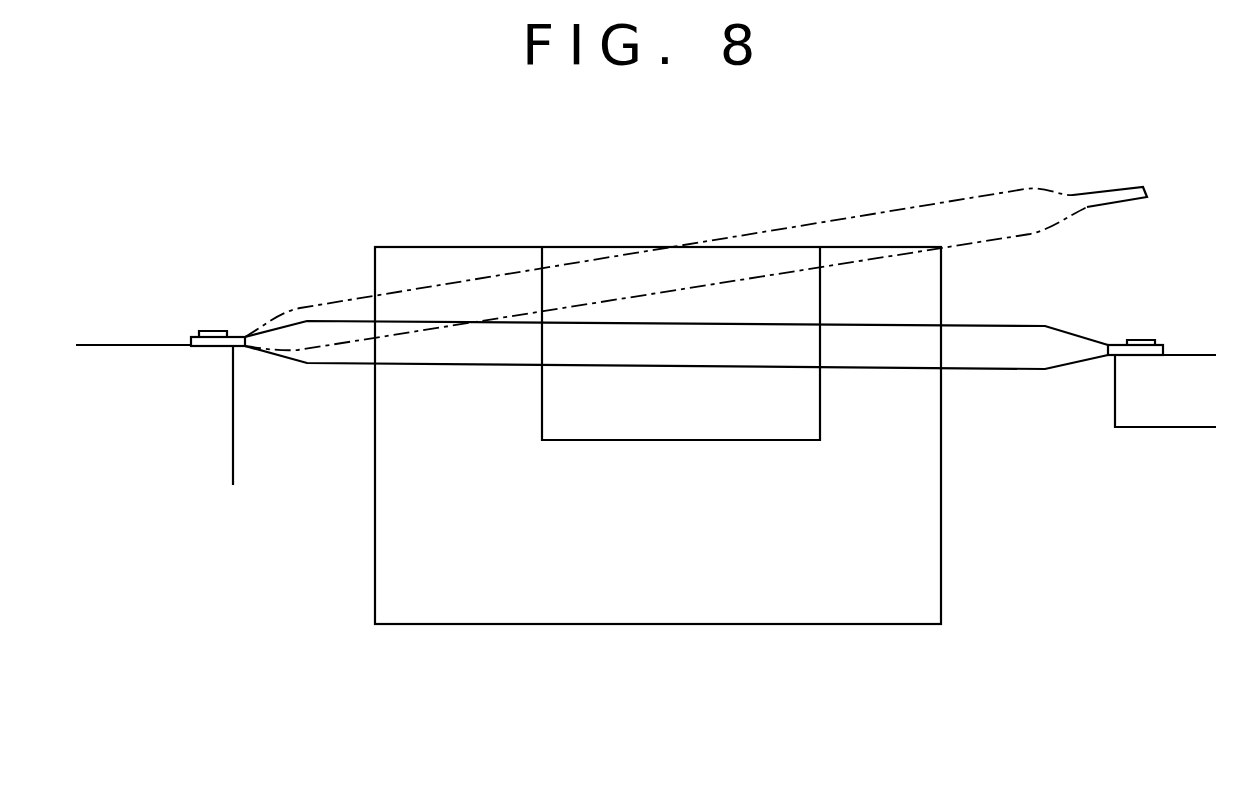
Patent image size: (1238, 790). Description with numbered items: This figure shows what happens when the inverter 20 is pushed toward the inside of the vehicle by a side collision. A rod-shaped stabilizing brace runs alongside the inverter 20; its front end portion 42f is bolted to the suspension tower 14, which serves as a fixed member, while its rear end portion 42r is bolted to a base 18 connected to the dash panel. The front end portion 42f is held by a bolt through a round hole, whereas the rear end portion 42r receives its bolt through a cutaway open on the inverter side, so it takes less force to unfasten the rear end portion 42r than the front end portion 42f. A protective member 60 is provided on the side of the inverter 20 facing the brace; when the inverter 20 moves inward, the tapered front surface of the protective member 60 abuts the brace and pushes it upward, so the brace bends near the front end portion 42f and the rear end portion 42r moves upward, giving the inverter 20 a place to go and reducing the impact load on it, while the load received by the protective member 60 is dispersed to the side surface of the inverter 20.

The suspension tower 14 is at (112, 345).
The front end portion 42f is at (237, 337).
The rear end portion 42r is at (1120, 342).
The base 18 is at (1180, 412).
The inverter 20 is at (847, 612).
The protective member 60 is at (757, 428).